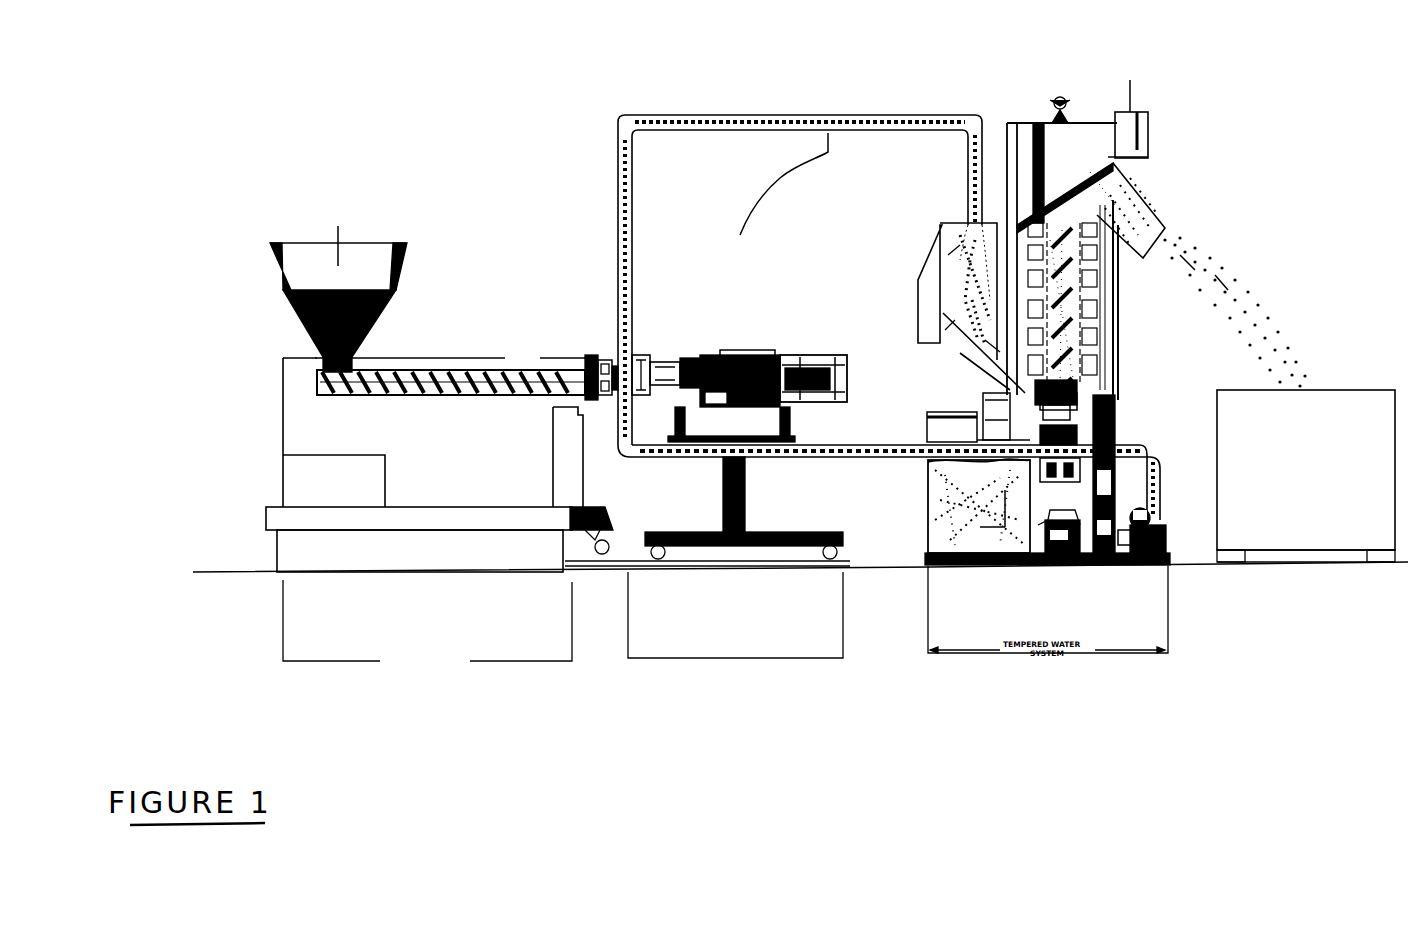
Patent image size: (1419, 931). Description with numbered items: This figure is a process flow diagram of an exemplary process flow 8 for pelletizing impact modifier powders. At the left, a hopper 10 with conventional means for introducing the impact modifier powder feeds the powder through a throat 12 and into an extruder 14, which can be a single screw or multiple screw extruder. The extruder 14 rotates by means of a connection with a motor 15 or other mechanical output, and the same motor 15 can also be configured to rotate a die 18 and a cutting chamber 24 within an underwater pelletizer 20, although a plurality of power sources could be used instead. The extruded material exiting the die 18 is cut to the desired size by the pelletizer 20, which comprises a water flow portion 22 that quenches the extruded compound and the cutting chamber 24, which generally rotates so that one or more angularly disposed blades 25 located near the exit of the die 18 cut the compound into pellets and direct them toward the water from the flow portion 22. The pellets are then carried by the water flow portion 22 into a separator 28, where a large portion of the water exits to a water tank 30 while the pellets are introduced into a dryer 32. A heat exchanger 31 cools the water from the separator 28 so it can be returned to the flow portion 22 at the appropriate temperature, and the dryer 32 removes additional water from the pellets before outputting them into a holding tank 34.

The process flow 8 is at (378, 136).
The hopper 10 is at (265, 248).
The throat 12 is at (313, 358).
The extruder 14 is at (467, 397).
The motor 15 is at (747, 350).
The die 18 is at (596, 355).
The pelletizer 20 is at (596, 283).
The water flow portion 22 is at (630, 352).
The cutting chamber 24 is at (640, 357).
The blades 25 is at (612, 392).
The separator 28 is at (918, 250).
The water tank 30 is at (923, 487).
The heat exchanger 31 is at (1163, 523).
The dryer 32 is at (1135, 210).
The holding tank 34 is at (1217, 425).